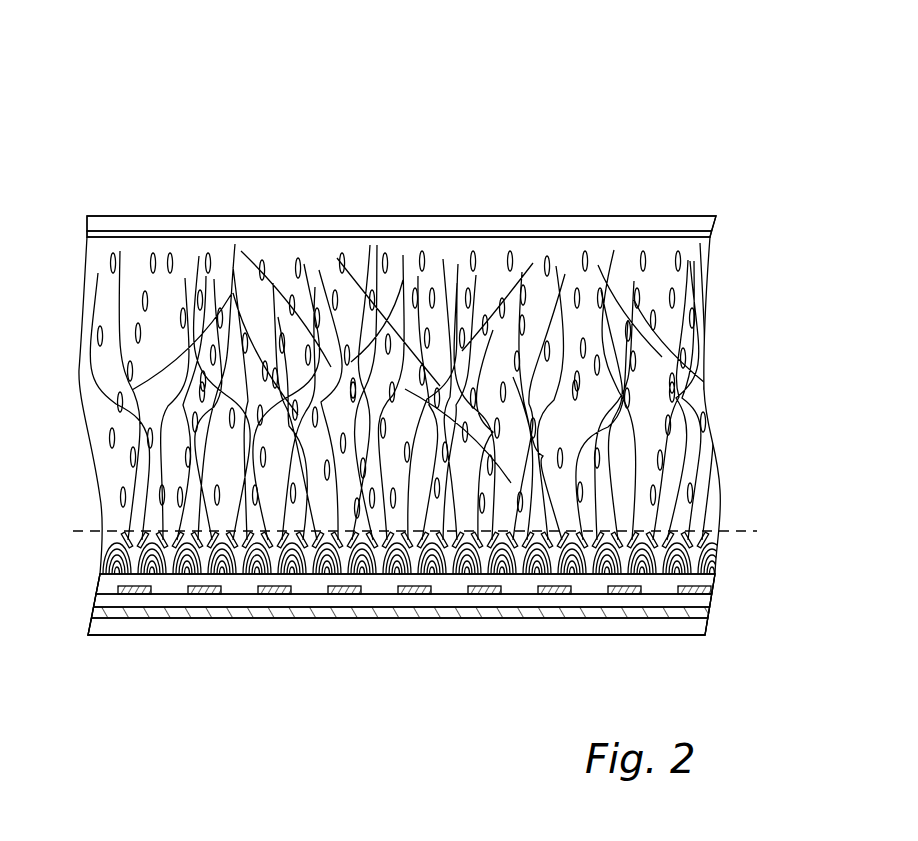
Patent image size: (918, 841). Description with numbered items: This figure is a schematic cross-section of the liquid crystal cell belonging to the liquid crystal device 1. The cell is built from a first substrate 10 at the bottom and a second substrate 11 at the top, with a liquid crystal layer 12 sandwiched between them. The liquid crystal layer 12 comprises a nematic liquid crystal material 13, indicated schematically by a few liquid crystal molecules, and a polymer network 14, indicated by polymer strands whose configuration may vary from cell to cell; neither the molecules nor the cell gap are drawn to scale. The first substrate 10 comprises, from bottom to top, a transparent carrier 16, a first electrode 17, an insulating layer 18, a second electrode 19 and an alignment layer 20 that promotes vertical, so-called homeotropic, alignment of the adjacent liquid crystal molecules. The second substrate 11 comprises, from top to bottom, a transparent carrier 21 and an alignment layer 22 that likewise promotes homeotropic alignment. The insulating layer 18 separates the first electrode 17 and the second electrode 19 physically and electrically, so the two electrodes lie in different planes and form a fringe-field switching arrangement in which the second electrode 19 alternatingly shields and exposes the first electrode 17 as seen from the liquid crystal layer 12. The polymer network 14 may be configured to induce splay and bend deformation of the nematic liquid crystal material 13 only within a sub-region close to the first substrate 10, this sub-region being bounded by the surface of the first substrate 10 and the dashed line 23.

The liquid crystal device 1 is at (560, 72).
The first substrate 10 is at (440, 634).
The second substrate 11 is at (435, 207).
The liquid crystal layer 12 is at (439, 370).
The nematic liquid crystal material 13 is at (546, 266).
The polymer network 14 is at (523, 415).
The transparent carrier 16 is at (107, 628).
The first electrode 17 is at (192, 612).
The insulating layer 18 is at (272, 603).
The second electrode 19 is at (344, 590).
The alignment layer 20 is at (716, 583).
The transparent carrier 21 is at (136, 226).
The alignment layer 22 is at (179, 236).
The dashed line 23 is at (742, 533).